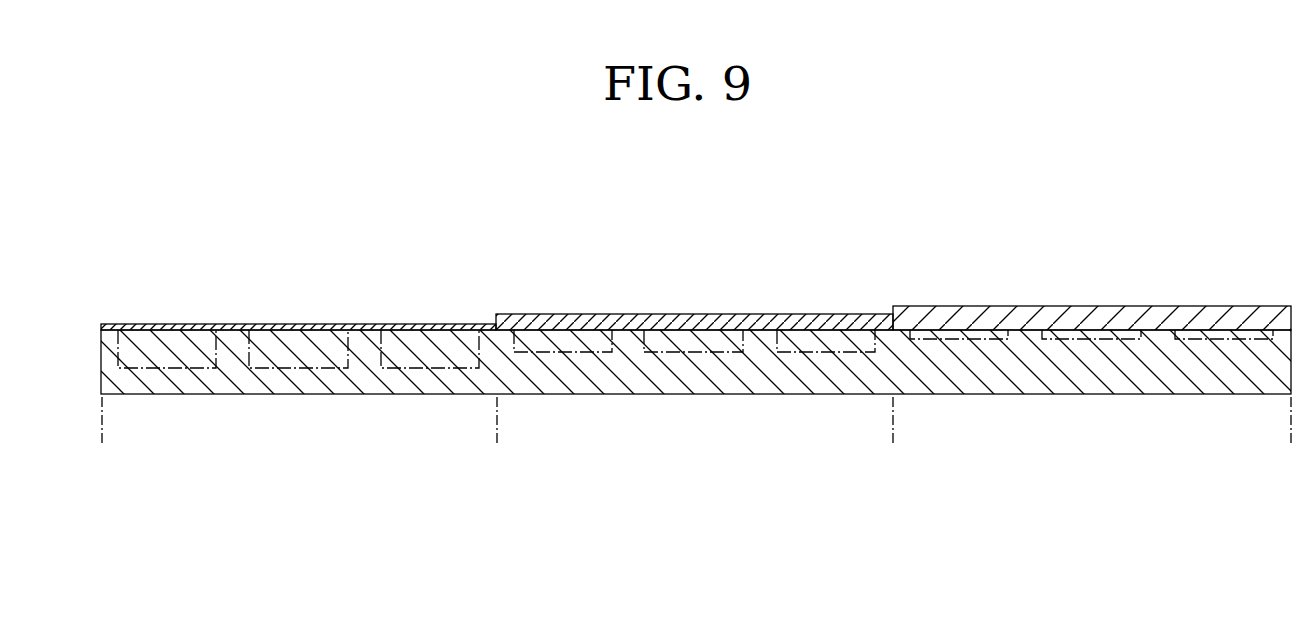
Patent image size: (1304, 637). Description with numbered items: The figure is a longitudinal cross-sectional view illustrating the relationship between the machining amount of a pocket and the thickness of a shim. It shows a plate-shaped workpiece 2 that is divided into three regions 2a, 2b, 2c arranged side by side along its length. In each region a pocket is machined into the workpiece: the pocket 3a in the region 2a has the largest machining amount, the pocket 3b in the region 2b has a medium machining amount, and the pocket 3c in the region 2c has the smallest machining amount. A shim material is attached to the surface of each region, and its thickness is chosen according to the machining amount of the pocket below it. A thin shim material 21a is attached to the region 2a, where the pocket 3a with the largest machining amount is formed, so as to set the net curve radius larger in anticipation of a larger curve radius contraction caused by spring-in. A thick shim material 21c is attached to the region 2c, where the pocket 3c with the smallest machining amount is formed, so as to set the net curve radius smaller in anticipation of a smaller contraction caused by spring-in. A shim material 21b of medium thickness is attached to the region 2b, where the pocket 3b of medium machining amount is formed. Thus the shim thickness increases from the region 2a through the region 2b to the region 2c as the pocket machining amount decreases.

The plate-shaped workpiece 2 is at (100, 363).
The region 2a is at (497, 443).
The region 2b is at (893, 443).
The region 2c is at (1291, 443).
The thin shim material 21a is at (230, 324).
The shim material having a medium thickness 21b is at (628, 314).
The thick shim material 21c is at (1025, 306).
The pocket 3a is at (317, 367).
The pocket 3b is at (713, 352).
The pocket 3c is at (1112, 338).